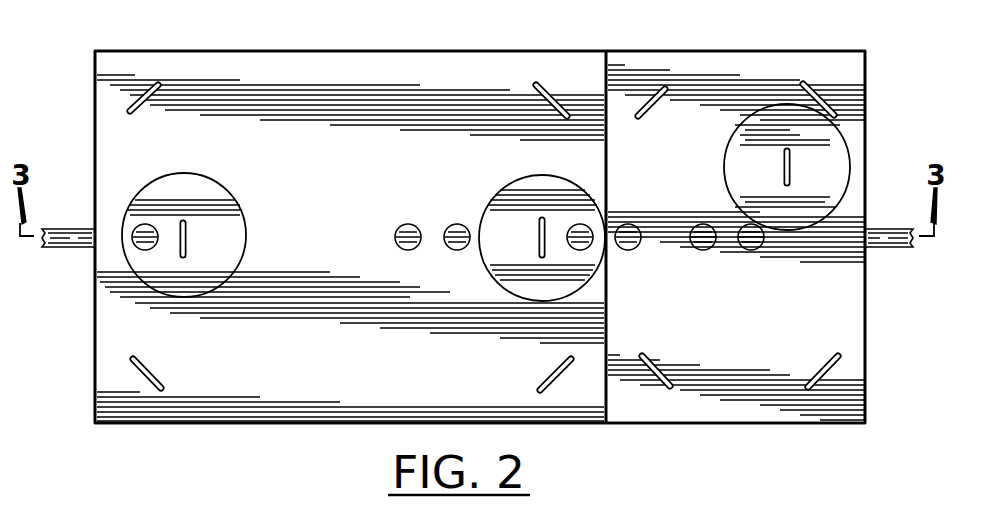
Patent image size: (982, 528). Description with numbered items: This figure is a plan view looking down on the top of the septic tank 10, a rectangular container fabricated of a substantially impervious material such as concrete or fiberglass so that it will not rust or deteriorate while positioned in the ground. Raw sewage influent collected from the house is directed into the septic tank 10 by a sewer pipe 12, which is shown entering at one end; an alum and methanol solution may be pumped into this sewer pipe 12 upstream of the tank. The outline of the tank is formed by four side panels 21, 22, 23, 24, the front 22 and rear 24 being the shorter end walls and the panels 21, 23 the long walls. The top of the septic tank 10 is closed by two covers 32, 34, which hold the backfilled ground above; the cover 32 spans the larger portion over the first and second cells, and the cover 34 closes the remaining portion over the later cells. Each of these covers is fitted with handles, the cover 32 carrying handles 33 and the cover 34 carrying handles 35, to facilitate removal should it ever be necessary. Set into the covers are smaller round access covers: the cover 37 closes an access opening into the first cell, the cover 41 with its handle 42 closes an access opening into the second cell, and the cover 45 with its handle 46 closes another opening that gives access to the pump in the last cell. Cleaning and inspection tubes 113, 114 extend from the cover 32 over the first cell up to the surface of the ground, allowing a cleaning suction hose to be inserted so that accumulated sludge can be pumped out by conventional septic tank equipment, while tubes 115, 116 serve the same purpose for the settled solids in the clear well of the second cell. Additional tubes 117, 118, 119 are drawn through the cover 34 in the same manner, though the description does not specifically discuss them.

The septic tank 10 is at (282, 45).
The sewer pipe 12 is at (72, 228).
The side panel 21 is at (549, 50).
The front side panel 22 is at (93, 323).
The side panel 23 is at (220, 426).
The rear side panel 24 is at (867, 298).
The cover 32 is at (303, 257).
The handle 33 is at (131, 113).
The cover 34 is at (715, 315).
The handle 35 is at (640, 116).
The access opening cover 37 is at (231, 185).
The access opening cover 41 is at (505, 186).
The handle 42 is at (538, 238).
The cover 45 is at (725, 150).
The handle 46 is at (784, 162).
The cleaning and inspection tube 113 is at (145, 224).
The cleaning and inspection tube 114 is at (404, 225).
The cleaning tube 115 is at (458, 251).
The cleaning tube 116 is at (584, 225).
The hole 117 is at (628, 224).
The hole 118 is at (709, 225).
The hole 119 is at (752, 251).